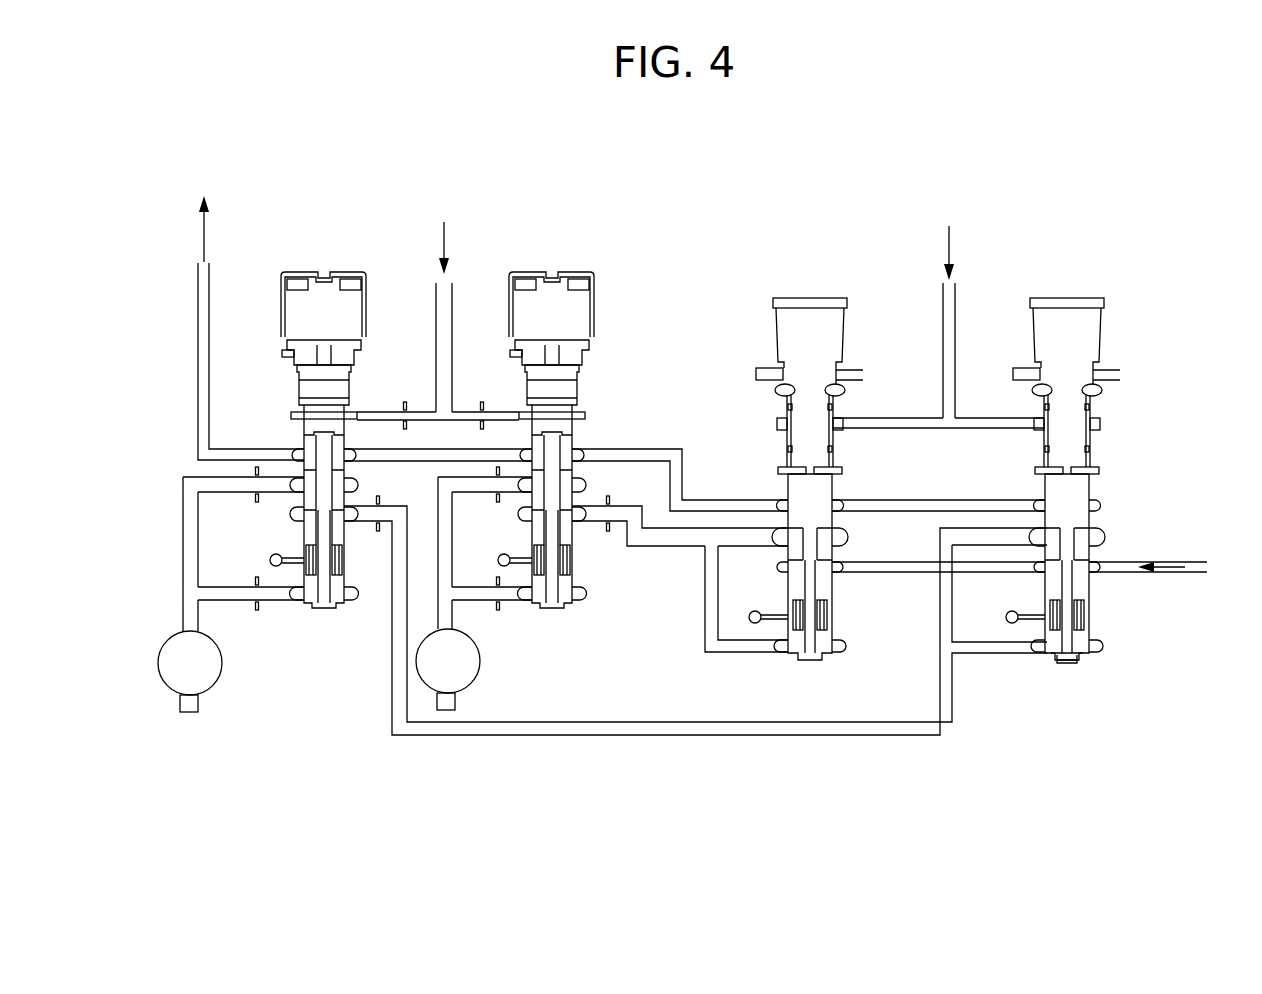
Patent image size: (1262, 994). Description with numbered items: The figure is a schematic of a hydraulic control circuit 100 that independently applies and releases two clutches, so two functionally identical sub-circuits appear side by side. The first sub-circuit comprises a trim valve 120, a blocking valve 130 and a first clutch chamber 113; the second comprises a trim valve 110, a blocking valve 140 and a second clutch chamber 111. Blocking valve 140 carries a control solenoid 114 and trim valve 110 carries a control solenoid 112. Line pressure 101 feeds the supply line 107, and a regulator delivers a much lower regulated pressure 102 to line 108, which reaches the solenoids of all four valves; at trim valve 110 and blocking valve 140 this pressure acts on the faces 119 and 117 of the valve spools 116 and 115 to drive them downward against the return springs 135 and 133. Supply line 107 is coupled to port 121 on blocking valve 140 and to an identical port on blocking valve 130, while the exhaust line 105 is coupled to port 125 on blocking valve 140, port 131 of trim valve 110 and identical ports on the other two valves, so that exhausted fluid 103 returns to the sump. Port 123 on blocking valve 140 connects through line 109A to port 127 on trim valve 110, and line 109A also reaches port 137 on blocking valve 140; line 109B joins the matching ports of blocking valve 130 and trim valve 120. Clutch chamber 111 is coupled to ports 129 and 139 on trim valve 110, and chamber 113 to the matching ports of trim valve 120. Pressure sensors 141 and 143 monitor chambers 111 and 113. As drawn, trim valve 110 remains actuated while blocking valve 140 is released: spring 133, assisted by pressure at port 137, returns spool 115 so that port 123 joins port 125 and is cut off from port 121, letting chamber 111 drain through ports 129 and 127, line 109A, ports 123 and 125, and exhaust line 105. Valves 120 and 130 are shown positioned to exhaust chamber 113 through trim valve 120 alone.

The hydraulic control circuit 100 is at (714, 157).
The line pressure 101 is at (1180, 562).
The regulated pressure 102 is at (450, 230).
The exhausted fluid 103 is at (215, 244).
The exhaust line 105 is at (198, 363).
The supply line 107 is at (1029, 569).
The regulated pressure line 108 is at (448, 334).
The line 109A is at (580, 737).
The line 109B is at (680, 536).
The trim valve 110 is at (319, 438).
The second clutch chamber 111 is at (231, 621).
The control solenoid 112 is at (323, 304).
The first clutch chamber 113 is at (484, 588).
The control solenoid 114 is at (1066, 347).
The valve spool 115 is at (1067, 431).
The valve spool 116 is at (324, 400).
The face 117 is at (1067, 470).
The face 119 is at (321, 352).
The trim valve 120 is at (615, 297).
The port 121 is at (1094, 567).
The port 123 is at (1037, 537).
The port 125 is at (1040, 505).
The port 127 is at (351, 514).
The port 129 is at (297, 485).
The blocking valve 130 is at (764, 321).
The port 131 is at (298, 455).
The return spring 133 is at (1067, 615).
The return spring 135 is at (324, 560).
The port 137 is at (1067, 658).
The port 139 is at (297, 593).
The blocking valve 140 is at (1027, 462).
The pressure sensor 141 is at (186, 712).
The pressure sensor 143 is at (458, 697).